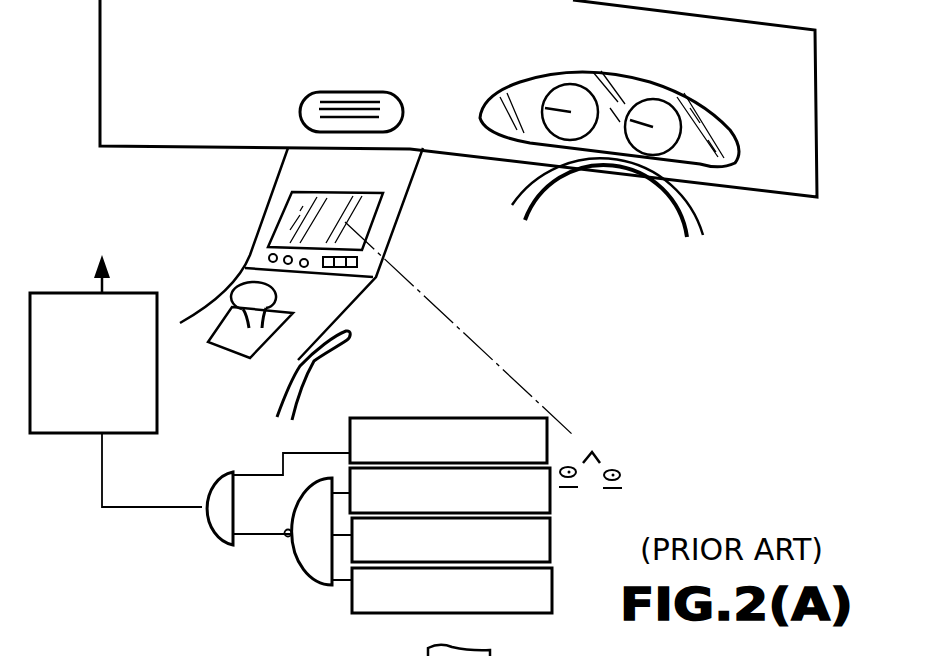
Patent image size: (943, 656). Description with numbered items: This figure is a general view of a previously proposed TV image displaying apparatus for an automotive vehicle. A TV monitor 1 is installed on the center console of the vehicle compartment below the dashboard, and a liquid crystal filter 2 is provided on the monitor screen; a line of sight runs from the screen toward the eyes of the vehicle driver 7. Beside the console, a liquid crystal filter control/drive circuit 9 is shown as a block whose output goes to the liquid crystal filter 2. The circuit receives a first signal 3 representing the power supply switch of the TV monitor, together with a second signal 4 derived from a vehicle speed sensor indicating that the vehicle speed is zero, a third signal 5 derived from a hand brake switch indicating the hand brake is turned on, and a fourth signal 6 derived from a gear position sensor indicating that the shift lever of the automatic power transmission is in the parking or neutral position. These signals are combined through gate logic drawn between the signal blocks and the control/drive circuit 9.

The TV monitor 1 is at (375, 272).
The liquid crystal filter 2 is at (367, 217).
The first signal 3 is at (325, 453).
The second signal 4 is at (332, 478).
The third signal 5 is at (338, 537).
The fourth signal 6 is at (347, 581).
The eyes of the vehicle driver 7 is at (630, 468).
The liquid crystal filter control/drive circuit 9 is at (157, 376).